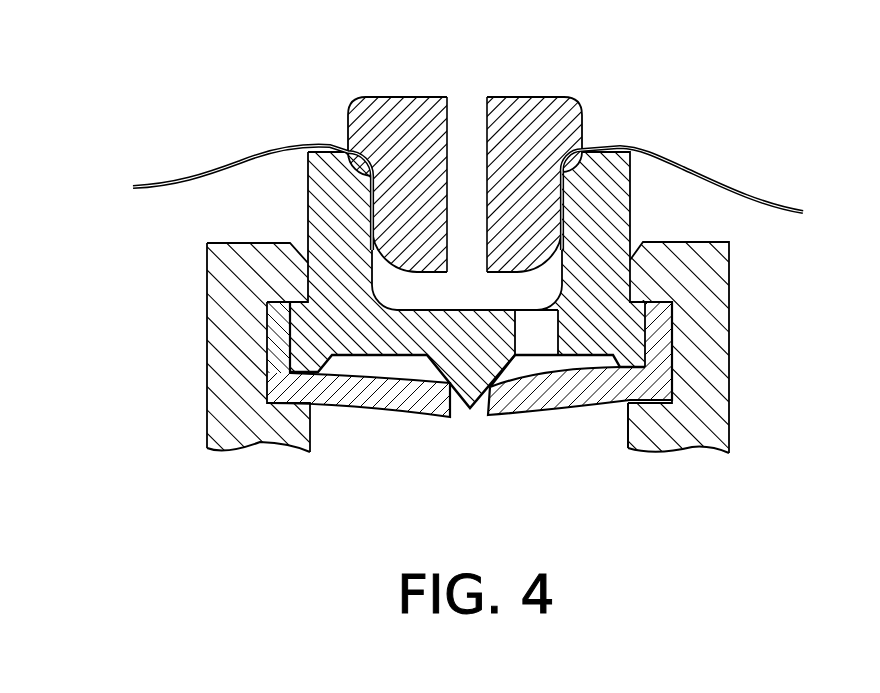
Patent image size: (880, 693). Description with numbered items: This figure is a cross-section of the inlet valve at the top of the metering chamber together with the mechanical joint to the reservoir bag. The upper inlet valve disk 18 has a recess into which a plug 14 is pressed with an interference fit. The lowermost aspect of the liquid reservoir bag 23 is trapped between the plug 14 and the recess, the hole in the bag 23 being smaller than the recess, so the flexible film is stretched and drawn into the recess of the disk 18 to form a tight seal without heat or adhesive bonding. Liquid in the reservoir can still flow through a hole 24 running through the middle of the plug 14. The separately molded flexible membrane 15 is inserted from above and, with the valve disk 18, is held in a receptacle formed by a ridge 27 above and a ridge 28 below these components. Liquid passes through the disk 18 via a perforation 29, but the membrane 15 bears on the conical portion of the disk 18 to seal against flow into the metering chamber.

The plug 14 is at (580, 107).
The hole 24 is at (458, 97).
The inlet valve disk 18 is at (307, 178).
The liquid reservoir bag 23 is at (670, 160).
The ridge 27 is at (650, 258).
The ridge 28 is at (657, 420).
The flexible membrane 15 is at (368, 412).
The perforation 29 is at (533, 355).